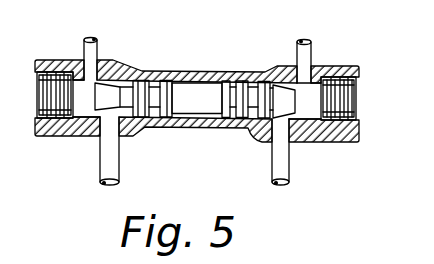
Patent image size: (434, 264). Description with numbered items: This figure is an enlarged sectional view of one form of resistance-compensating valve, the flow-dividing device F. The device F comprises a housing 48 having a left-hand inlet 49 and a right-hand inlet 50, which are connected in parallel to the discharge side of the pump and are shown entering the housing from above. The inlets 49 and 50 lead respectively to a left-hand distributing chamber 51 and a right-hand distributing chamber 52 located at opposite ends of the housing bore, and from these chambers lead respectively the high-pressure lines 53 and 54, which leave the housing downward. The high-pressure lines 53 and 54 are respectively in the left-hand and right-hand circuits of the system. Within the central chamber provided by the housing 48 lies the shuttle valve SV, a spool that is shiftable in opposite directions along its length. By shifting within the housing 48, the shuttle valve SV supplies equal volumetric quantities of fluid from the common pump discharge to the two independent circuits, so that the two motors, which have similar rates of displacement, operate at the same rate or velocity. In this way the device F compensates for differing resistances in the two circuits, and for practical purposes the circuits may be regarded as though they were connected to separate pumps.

The housing 48 is at (49, 60).
The left-hand inlet 49 is at (84, 53).
The right-hand inlet 50 is at (301, 64).
The left-hand distributing chamber 51 is at (88, 110).
The right-hand distributing chamber 52 is at (313, 93).
The high-pressure line 53 is at (105, 172).
The high-pressure line 54 is at (287, 172).
The shuttle valve SV is at (207, 83).
The flow-dividing device F is at (195, 137).